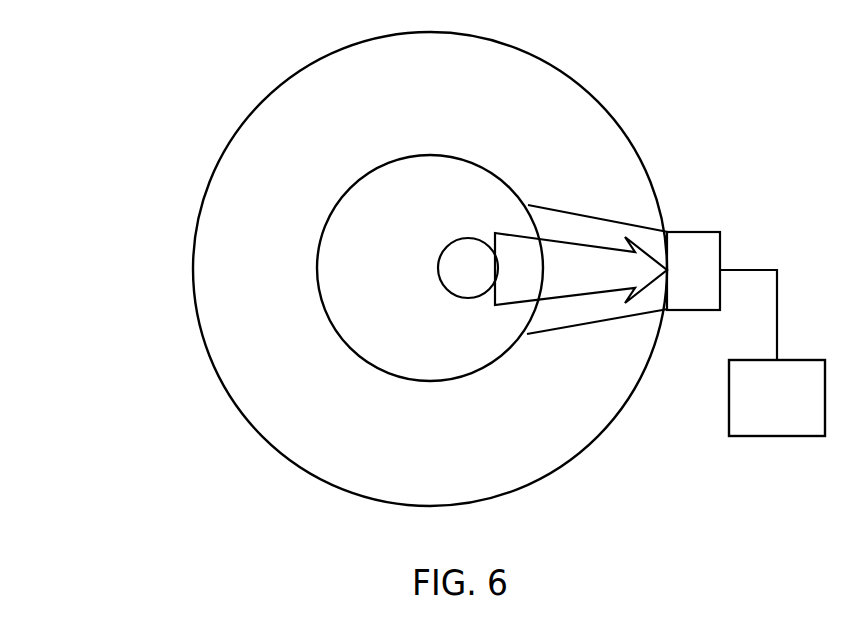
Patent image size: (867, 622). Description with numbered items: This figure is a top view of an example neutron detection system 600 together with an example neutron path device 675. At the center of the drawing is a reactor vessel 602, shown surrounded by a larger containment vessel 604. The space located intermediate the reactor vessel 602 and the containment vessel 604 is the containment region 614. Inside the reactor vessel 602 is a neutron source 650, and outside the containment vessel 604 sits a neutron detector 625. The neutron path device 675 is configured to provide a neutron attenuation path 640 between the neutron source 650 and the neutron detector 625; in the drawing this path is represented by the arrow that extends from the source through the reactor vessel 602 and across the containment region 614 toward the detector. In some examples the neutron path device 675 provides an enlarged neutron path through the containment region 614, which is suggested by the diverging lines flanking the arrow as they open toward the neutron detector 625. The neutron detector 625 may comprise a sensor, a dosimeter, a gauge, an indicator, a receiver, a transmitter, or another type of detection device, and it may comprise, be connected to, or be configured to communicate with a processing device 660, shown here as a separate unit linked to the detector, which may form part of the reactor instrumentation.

The neutron detection system 600 is at (152, 125).
The containment vessel 604 is at (278, 80).
The reactor vessel 602 is at (358, 178).
The containment region 614 is at (442, 106).
The neutron source 650 is at (444, 248).
The neutron attenuation path 640 is at (575, 277).
The neutron path device 675 is at (617, 215).
The neutron detector 625 is at (712, 225).
The processing device 660 is at (758, 422).